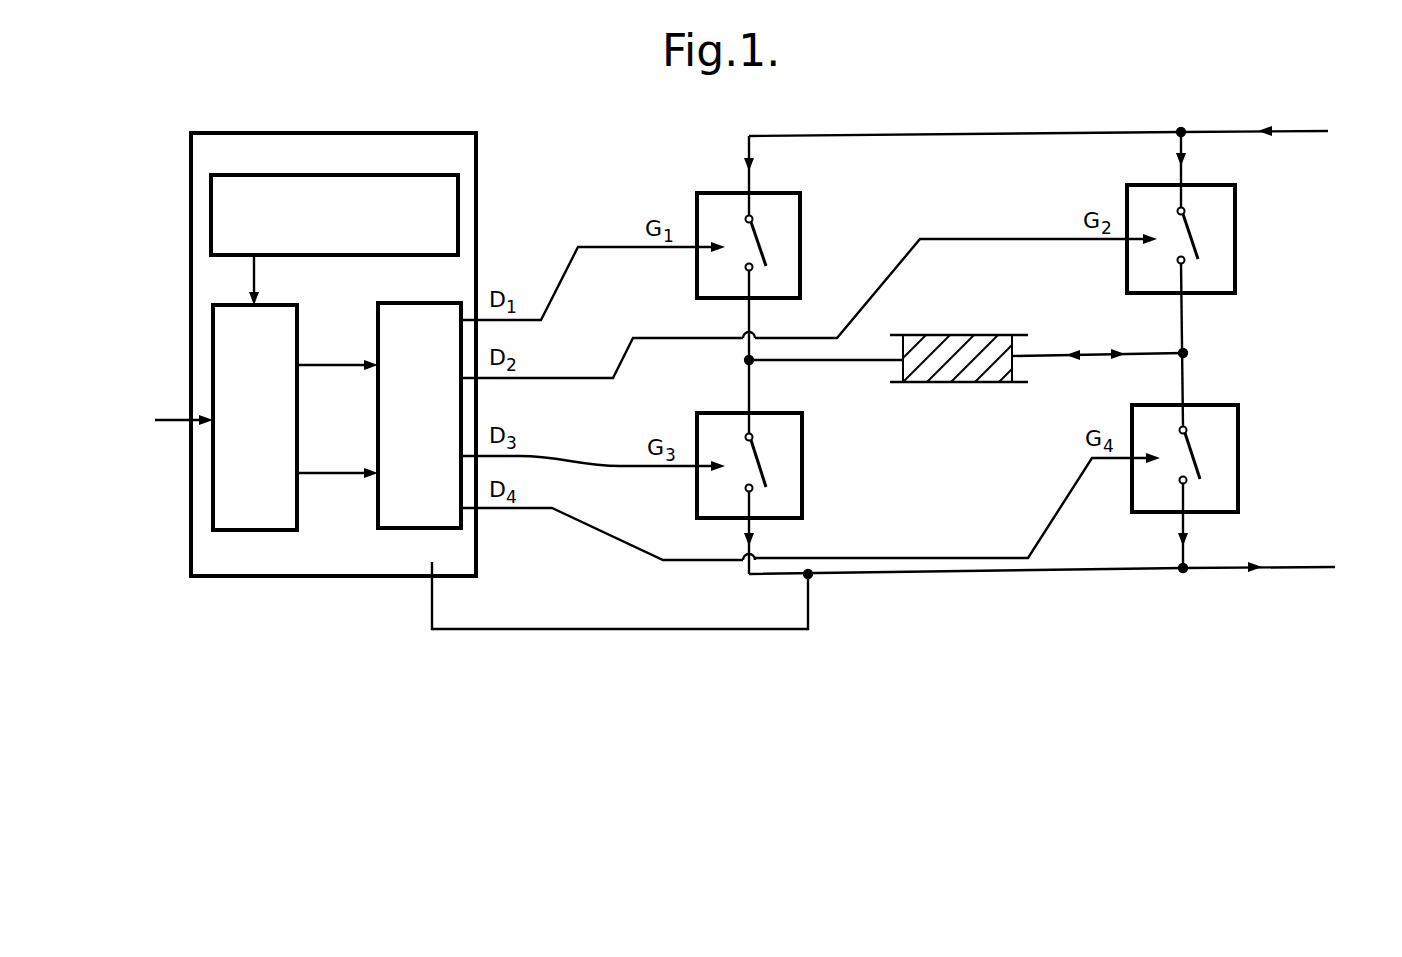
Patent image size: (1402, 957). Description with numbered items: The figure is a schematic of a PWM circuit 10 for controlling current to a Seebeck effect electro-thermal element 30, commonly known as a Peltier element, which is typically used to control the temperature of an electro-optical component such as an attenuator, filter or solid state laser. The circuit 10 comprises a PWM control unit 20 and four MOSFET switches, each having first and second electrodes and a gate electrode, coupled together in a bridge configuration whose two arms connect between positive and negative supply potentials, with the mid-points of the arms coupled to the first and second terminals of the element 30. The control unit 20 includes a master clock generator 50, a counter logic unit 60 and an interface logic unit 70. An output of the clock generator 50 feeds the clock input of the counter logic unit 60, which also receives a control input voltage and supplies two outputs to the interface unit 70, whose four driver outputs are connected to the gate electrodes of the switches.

The PWM circuit 10 is at (1094, 116).
The PWM control unit 20 is at (237, 573).
The Seebeck effect electro-thermal element 30 is at (950, 392).
The master clock generator 50 is at (447, 212).
The counter logic unit 60 is at (286, 336).
The interface logic unit 70 is at (429, 336).